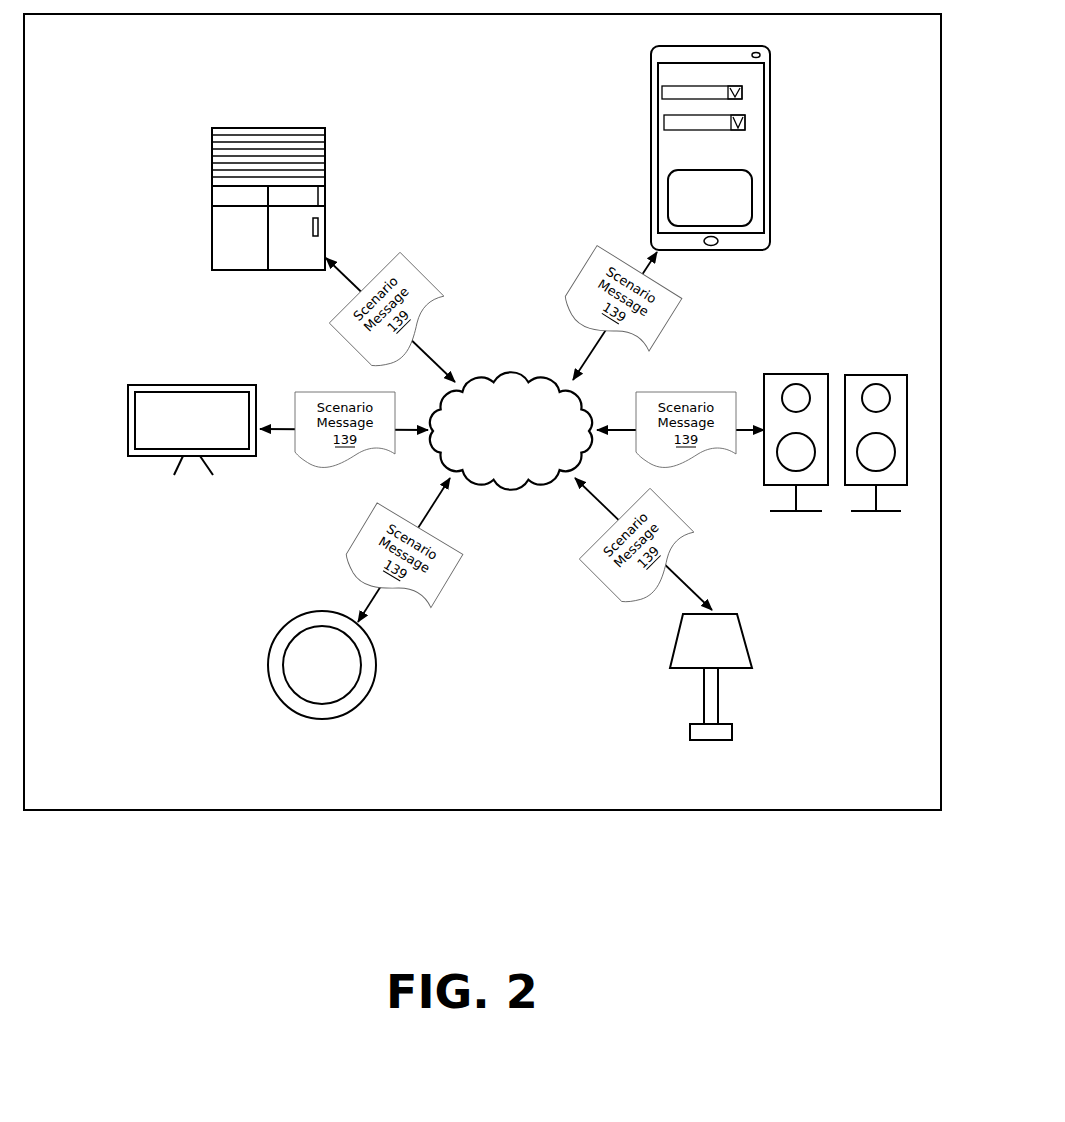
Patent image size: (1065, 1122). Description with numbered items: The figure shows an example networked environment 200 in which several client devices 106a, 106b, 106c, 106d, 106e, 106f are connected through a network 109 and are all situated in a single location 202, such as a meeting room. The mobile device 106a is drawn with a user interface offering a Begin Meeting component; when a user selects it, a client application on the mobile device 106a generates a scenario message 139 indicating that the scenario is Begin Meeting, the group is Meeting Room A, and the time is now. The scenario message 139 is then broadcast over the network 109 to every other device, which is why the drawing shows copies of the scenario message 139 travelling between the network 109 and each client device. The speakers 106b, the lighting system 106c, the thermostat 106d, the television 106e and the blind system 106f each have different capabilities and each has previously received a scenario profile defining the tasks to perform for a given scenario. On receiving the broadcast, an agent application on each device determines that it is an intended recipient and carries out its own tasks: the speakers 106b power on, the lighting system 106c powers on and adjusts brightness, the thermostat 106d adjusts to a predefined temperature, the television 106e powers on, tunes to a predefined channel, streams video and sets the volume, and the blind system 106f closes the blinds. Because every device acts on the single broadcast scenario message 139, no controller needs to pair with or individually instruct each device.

The networked environment 200 is at (482, 493).
The location 202 is at (836, 812).
The mobile device 106a is at (650, 126).
The speakers 106b is at (828, 374).
The lighting system 106c is at (678, 640).
The thermostat 106d is at (268, 668).
The television 106e is at (128, 427).
The blind system 106f is at (212, 186).
The network 109 is at (500, 448).
The scenario message 139 is at (515, 433).